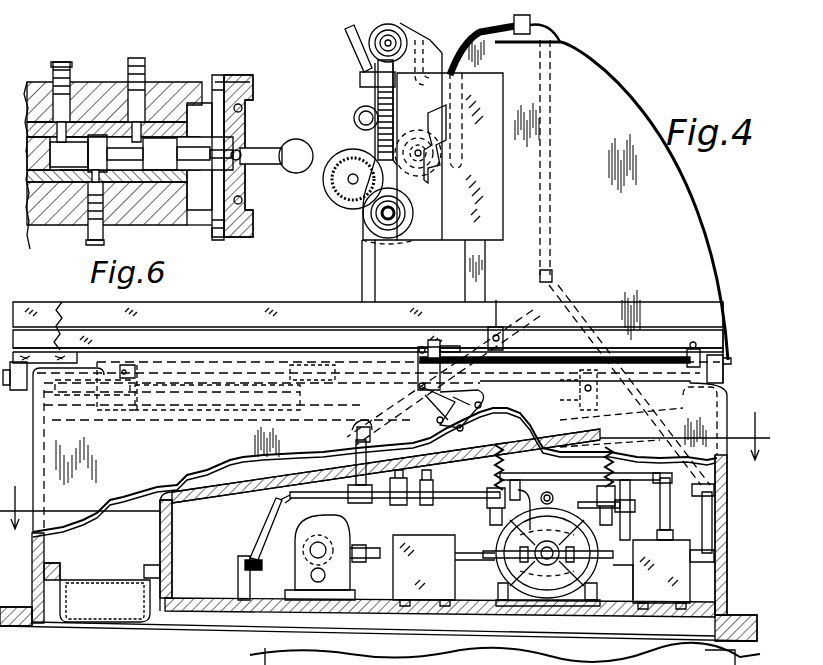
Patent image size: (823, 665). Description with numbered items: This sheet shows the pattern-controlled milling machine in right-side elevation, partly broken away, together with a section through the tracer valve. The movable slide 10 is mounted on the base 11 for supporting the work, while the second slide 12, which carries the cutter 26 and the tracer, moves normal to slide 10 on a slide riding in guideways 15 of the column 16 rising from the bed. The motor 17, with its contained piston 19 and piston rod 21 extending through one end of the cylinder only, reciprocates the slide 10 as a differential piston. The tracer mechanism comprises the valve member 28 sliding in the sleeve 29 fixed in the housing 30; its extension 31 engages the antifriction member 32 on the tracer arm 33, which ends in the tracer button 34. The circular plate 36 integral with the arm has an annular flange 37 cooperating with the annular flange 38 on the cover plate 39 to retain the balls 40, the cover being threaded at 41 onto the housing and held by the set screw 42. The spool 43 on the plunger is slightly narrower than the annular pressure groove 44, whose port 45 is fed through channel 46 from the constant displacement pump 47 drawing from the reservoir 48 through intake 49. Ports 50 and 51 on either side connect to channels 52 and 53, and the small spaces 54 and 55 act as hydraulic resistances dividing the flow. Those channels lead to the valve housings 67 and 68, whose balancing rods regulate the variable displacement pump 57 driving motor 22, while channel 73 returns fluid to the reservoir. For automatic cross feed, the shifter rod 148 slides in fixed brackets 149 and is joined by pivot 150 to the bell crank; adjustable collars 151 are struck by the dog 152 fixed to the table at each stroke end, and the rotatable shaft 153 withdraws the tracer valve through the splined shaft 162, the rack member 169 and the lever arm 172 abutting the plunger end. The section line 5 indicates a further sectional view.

In FIG. 4, the section line 5- 5 is at (384, 483).
In FIG. 4, the movable slide 10 is at (282, 315).
In FIG. 4, the base 11 is at (33, 435).
In FIG. 4, the second slide 12 is at (490, 202).
In FIG. 4, the guideways 15 is at (465, 280).
In FIG. 4, the column 16 is at (708, 262).
In FIG. 4, the motor 17 is at (218, 362).
In FIG. 4, the piston 19 is at (318, 380).
In FIG. 4, the piston rod 21 is at (170, 380).
In FIG. 4, the motor 22 is at (410, 135).
In FIG. 4, the cutter 26 is at (388, 240).
In FIG. 6, the valve member 28 is at (45, 185).
In FIG. 6, the sleeve 29 is at (120, 130).
In FIG. 6, the housing 30 is at (168, 95).
In FIG. 6, the extension 31 is at (200, 150).
In FIG. 6, the antifriction member 32 is at (240, 135).
In FIG. 6, the tracer arm 33 is at (252, 150).
In FIG. 6, the tracer button 34 is at (296, 173).
In FIG. 4, the tracer button 34 is at (400, 25).
In FIG. 6, the circular plate 36 is at (216, 95).
In FIG. 6, the annular flange 37 is at (245, 76).
In FIG. 6, the annular flange 38 is at (243, 106).
In FIG. 6, the cover plate 39 is at (253, 78).
In FIG. 6, the balls 40 is at (243, 202).
In FIG. 6, the threads 41 is at (206, 228).
In FIG. 6, the set screw 42 is at (224, 234).
In FIG. 6, the spool 43 is at (62, 127).
In FIG. 6, the annular pressure groove 44 is at (92, 185).
In FIG. 6, the port 45 is at (103, 200).
In FIG. 6, the channel 46 is at (88, 240).
In FIG. 4, the constant displacement pump 47 is at (332, 575).
In FIG. 4, the reservoir 48 is at (183, 610).
In FIG. 4, the intake 49 is at (260, 556).
In FIG. 6, the port 50 is at (52, 66).
In FIG. 6, the port 51 is at (140, 122).
In FIG. 6, the channel 52 is at (60, 62).
In FIG. 6, the channel 53 is at (137, 60).
In FIG. 4, the channel 53 is at (712, 520).
In FIG. 6, the space 54 is at (80, 137).
In FIG. 6, the space 55 is at (95, 135).
In FIG. 4, the variable displacement pump 57 is at (546, 598).
In FIG. 4, the valve housing 67 is at (432, 590).
In FIG. 4, the valve housing 68 is at (690, 582).
In FIG. 4, the channel 73 is at (670, 507).
In FIG. 4, the shifter rod 148 is at (646, 356).
In FIG. 4, the fixed brackets 149 is at (718, 348).
In FIG. 4, the pivot 150 is at (418, 350).
In FIG. 4, the adjustable collars 151 is at (470, 352).
In FIG. 4, the dog 152 is at (496, 300).
In FIG. 4, the rotatable shaft 153 is at (418, 388).
In FIG. 4, the splined shaft 162 is at (375, 285).
In FIG. 4, the rack member 169 is at (370, 93).
In FIG. 4, the lever arm 172 is at (351, 27).